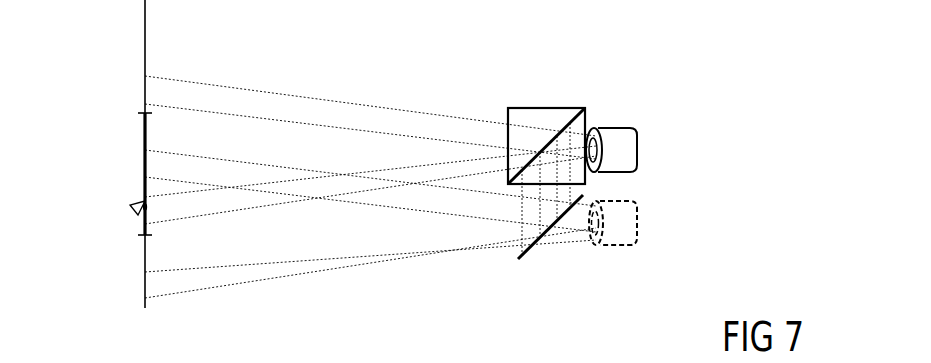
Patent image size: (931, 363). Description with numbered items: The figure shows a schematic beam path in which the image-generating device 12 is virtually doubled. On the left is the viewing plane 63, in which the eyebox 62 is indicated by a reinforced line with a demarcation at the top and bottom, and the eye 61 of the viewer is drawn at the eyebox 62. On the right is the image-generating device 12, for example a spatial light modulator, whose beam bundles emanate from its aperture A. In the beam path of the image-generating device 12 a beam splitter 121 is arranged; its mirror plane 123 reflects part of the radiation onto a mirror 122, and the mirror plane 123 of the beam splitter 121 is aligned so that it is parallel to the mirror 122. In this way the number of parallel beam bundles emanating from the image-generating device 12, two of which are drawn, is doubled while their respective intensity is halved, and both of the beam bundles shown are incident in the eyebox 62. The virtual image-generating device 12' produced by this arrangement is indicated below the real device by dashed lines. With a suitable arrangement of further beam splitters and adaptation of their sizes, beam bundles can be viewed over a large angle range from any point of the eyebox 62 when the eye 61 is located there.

The eye 61 is at (138, 214).
The eyebox 62 is at (145, 148).
The viewing plane 63 is at (145, 23).
The beam splitter 121 is at (518, 108).
The mirror plane 123 is at (556, 126).
The aperture A is at (588, 135).
The image-generating device 12 is at (628, 102).
The mirror 122 is at (548, 242).
The virtual image-generating device 12' is at (616, 263).